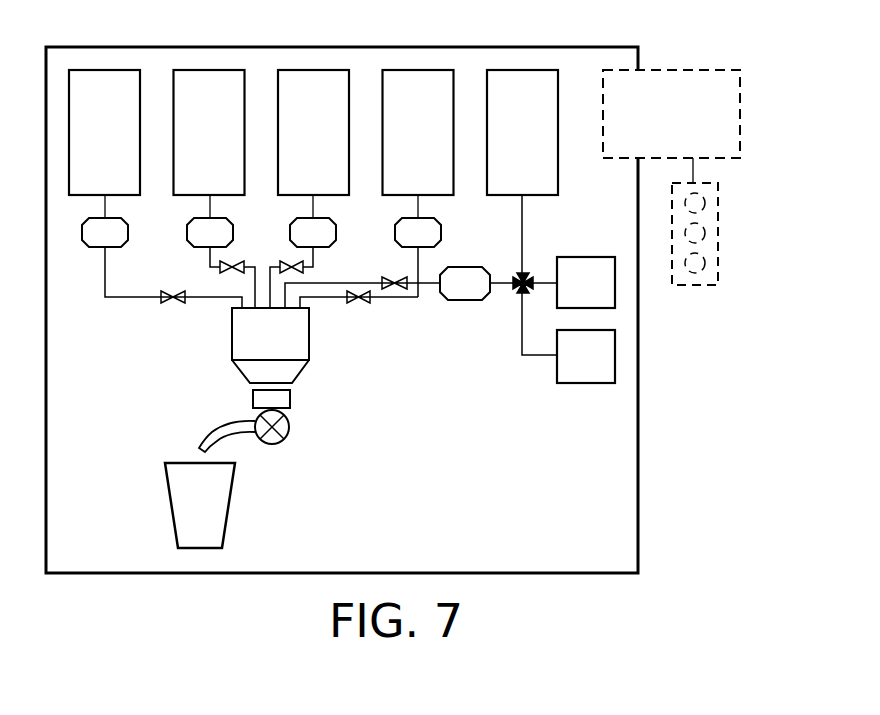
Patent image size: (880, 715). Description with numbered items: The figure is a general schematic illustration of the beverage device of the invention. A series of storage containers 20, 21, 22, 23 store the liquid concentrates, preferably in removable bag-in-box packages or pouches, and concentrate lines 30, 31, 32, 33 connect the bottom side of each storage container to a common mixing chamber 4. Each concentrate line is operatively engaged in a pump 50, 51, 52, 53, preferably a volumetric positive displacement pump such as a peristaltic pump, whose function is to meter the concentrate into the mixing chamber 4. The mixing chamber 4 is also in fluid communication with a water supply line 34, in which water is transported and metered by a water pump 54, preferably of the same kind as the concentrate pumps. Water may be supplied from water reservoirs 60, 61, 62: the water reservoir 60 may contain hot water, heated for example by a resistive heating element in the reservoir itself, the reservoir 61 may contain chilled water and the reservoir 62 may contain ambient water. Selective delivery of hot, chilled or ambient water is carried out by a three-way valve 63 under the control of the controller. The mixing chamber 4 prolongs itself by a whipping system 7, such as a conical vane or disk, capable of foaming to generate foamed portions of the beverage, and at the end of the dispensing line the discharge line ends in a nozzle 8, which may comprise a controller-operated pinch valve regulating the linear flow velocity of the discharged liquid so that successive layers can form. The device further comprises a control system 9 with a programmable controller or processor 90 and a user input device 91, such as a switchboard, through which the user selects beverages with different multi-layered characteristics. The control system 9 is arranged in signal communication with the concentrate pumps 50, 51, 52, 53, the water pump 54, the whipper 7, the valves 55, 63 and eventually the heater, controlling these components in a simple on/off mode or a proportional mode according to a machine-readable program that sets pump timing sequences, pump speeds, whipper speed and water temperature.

The storage container 20 is at (112, 70).
The storage container 21 is at (216, 70).
The storage container 22 is at (320, 70).
The storage container 23 is at (424, 70).
The water reservoir 60 is at (529, 70).
The concentrate line 30 is at (106, 206).
The concentrate line 31 is at (211, 206).
The concentrate line 32 is at (314, 207).
The concentrate line 33 is at (419, 206).
The pump 50 is at (91, 248).
The pump 51 is at (186, 236).
The pump 52 is at (337, 246).
The pump 53 is at (442, 232).
The water pump 54 is at (467, 300).
The valve 55 is at (174, 304).
The water supply line 34 is at (335, 298).
The mixing chamber 4 is at (310, 353).
The whipping system 7 is at (290, 433).
The nozzle 8 is at (222, 430).
The water reservoir 61 is at (590, 257).
The water reservoir 62 is at (590, 383).
The three-way valve 63 is at (528, 272).
The programmable controller or processor 90 is at (741, 138).
The user input device 91 is at (726, 221).
The control system 9 is at (727, 177).